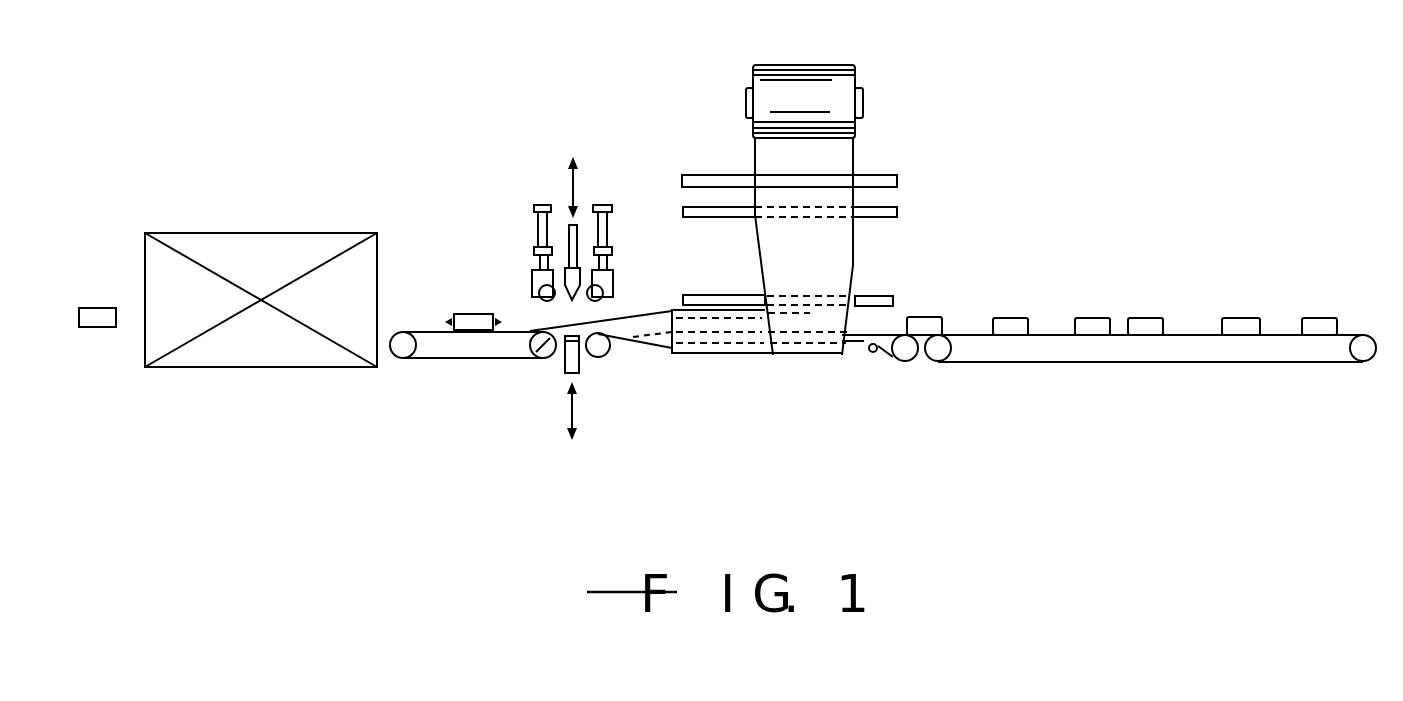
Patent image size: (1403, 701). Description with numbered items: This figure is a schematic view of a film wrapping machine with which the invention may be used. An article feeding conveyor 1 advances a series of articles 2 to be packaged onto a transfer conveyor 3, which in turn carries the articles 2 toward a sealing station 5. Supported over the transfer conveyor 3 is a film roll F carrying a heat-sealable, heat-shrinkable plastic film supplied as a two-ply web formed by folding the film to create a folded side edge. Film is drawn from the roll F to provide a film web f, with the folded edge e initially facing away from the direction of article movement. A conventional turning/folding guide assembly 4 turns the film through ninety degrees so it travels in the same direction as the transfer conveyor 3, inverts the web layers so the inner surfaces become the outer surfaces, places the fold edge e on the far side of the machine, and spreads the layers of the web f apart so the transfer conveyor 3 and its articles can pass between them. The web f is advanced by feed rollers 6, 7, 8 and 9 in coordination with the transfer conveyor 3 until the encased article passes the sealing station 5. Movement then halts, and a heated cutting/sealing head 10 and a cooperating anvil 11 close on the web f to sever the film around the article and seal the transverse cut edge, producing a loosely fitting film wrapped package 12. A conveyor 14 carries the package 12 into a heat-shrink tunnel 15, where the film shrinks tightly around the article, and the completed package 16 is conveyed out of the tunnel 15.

The article feeding conveyor 1 is at (1077, 362).
The articles 2 is at (925, 315).
The transfer conveyor 3 is at (860, 347).
The turning/folding guide assembly 4 is at (713, 311).
The sealing station 5 is at (597, 173).
The feed roller 6 is at (598, 358).
The feed roller 7 is at (543, 358).
The feed roller 8 is at (603, 292).
The feed roller 9 is at (540, 290).
The heated cutting/sealing head 10 is at (608, 282).
The anvil 11 is at (563, 358).
The film wrapped package 12 is at (472, 313).
The conveyor 14 is at (442, 360).
The heat-shrink tunnel 15 is at (292, 232).
The completed package 16 is at (97, 308).
The film roll F is at (813, 65).
The folded edge e is at (857, 235).
The film web f is at (813, 260).